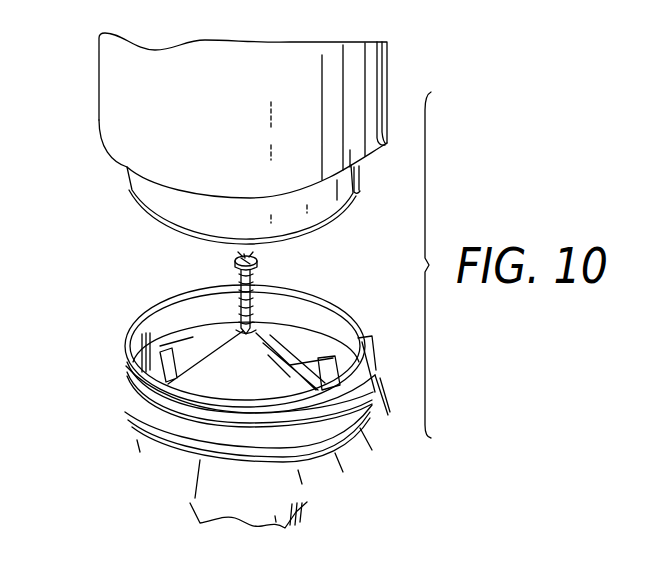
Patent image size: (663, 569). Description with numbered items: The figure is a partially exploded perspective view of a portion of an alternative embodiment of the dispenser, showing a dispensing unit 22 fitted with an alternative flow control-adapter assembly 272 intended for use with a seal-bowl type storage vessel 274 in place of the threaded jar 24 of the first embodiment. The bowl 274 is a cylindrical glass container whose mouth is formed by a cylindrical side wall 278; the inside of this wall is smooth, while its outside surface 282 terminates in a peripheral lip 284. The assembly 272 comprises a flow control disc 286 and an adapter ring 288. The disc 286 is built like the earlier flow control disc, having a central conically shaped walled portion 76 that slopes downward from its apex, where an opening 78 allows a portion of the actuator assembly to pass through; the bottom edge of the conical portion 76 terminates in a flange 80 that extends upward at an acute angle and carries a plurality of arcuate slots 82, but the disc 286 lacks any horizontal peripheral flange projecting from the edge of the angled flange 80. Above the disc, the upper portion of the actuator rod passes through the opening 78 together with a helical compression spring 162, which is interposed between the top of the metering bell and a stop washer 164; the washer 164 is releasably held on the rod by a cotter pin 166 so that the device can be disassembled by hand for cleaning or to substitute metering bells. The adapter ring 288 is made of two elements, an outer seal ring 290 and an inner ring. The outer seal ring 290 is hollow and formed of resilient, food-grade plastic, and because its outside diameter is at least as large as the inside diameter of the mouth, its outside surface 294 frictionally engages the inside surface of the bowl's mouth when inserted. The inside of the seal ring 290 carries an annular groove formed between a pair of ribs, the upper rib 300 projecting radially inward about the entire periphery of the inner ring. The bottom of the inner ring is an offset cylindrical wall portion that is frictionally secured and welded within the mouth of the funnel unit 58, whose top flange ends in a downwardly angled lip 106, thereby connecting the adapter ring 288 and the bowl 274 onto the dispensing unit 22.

The jar 24 is at (129, 99).
The seal-bowl type storage vessel 274 is at (354, 74).
The cylindrical side wall 278 is at (387, 143).
The peripheral lip 284 is at (141, 203).
The outside surface 282 is at (359, 176).
The stop washer 164 is at (233, 258).
The cotter pin 166 is at (258, 256).
The helical compression spring 162 is at (261, 284).
The rib 300 is at (160, 318).
The opening 78 is at (256, 334).
The flow control disc 286 is at (203, 379).
The central conically shaped walled portion 76 is at (312, 347).
The arcuate slots 82 is at (308, 347).
The flange 80 is at (352, 333).
The adapter ring 288 is at (361, 344).
The flow control-adapter assembly 272 is at (323, 373).
The outside surface 294 is at (133, 376).
The outer seal ring 290 is at (370, 400).
The dispensing unit 22 is at (127, 437).
The lip 106 is at (378, 436).
The funnel unit 58 is at (334, 473).